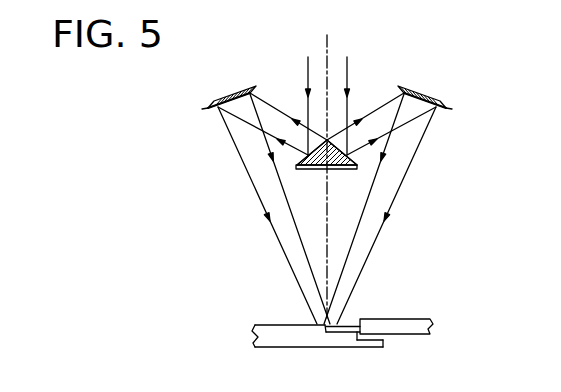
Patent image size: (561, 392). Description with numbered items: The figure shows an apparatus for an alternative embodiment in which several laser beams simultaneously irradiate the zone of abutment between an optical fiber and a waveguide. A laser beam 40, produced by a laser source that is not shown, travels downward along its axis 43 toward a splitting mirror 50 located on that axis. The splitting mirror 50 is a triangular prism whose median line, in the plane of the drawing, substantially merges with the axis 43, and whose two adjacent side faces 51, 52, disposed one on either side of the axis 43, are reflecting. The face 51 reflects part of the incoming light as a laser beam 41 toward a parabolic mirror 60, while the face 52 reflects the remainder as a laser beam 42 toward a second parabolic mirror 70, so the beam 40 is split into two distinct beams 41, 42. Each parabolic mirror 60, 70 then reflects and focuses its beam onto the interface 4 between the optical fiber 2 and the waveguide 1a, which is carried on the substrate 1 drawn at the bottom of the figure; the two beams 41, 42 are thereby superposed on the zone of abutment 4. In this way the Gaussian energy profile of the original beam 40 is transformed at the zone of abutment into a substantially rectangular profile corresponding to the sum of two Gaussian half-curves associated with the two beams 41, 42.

The substrate 1 is at (316, 335).
The waveguide 1a is at (292, 323).
The optical fiber 2 is at (410, 335).
The interface (zone of abutment) 4 is at (351, 303).
The laser beam 40 is at (347, 70).
The laser beam 41 is at (382, 108).
The laser beam 42 is at (268, 104).
The axis of the laser beam 43 is at (327, 45).
The splitting mirror 50 is at (330, 190).
The side face 51 is at (357, 167).
The side face 52 is at (297, 167).
The parabolic mirror 60 is at (427, 88).
The parabolic mirror 70 is at (233, 82).